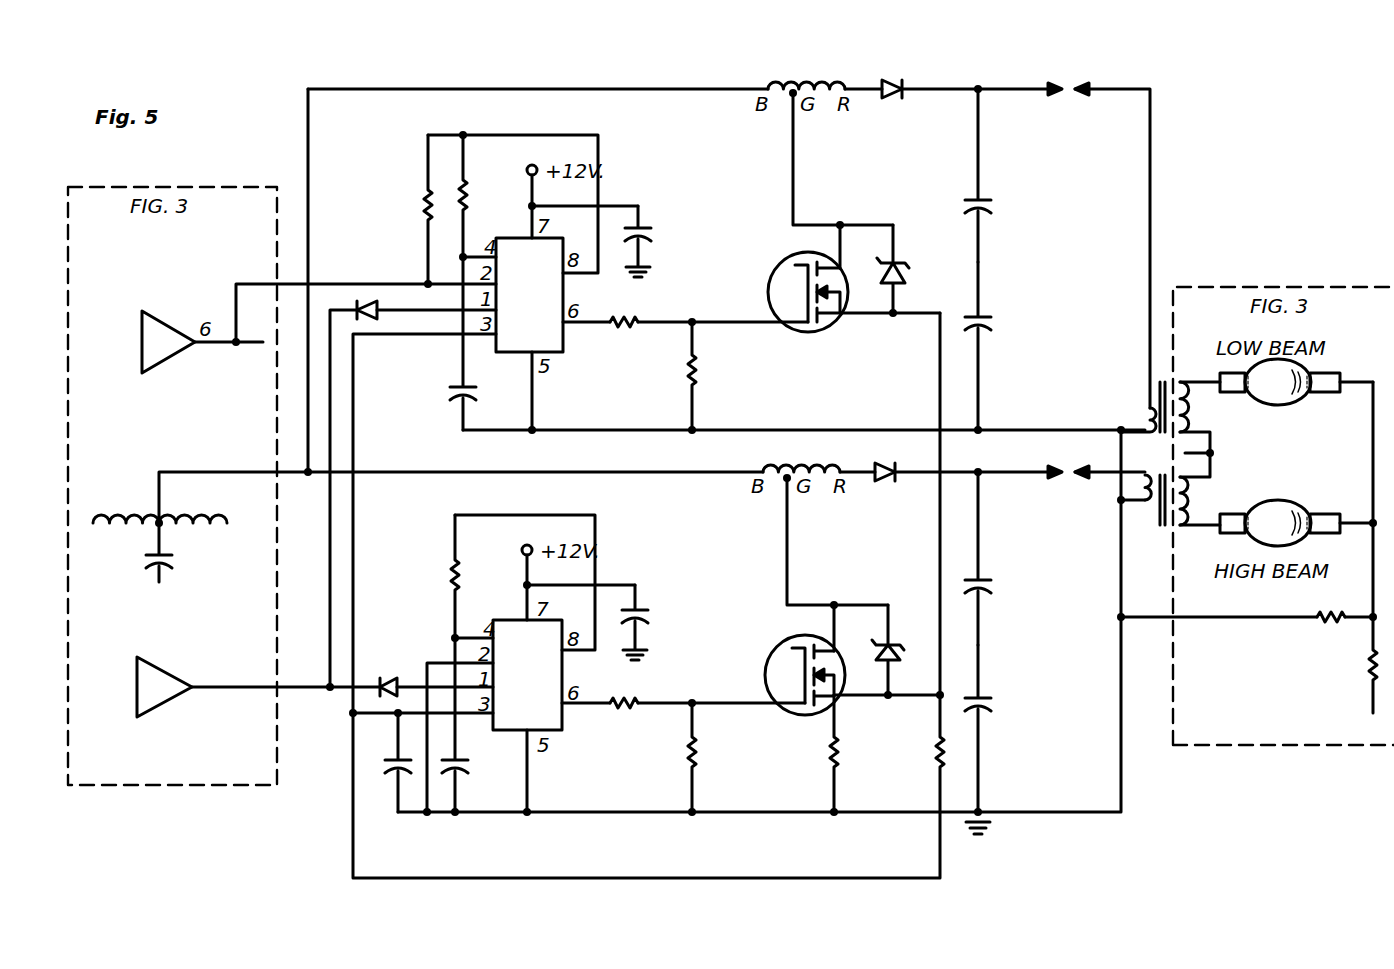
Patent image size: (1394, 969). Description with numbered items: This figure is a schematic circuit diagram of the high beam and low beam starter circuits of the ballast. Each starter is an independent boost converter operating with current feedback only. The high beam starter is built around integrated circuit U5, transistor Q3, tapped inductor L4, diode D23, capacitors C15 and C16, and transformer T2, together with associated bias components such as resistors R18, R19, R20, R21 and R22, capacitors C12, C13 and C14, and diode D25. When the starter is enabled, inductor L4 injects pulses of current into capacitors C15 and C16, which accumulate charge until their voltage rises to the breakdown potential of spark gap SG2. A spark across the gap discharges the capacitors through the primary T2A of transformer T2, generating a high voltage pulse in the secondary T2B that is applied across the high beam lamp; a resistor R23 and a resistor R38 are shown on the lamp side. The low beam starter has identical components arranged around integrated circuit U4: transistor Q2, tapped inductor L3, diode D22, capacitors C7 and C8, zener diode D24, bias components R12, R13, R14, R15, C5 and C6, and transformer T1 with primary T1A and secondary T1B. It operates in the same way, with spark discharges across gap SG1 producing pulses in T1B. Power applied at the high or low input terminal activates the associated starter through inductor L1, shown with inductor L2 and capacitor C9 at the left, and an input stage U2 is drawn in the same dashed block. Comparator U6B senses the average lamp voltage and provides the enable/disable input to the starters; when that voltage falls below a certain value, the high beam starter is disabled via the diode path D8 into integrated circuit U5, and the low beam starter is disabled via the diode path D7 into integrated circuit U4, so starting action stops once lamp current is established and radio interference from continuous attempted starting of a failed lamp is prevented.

The amplifier / comparator U2 is at (168, 342).
The comparator U6B is at (164, 687).
The inductor L1 is at (120, 515).
The inductor L2 is at (201, 530).
The capacitor C9 is at (152, 576).
The resistor R12 is at (425, 202).
The resistor R13 is at (470, 198).
The integrated circuit U4 is at (529, 295).
The capacitor C6 is at (643, 228).
The capacitor C5 is at (448, 387).
The diode D7 is at (377, 310).
The resistor R14 is at (626, 332).
The resistor R15 is at (715, 376).
The inductor L3 is at (814, 82).
The diode D22 is at (895, 78).
The spark gap SG1 is at (1068, 83).
The MOSFET transistor Q2 is at (808, 292).
The zener diode D24 is at (900, 264).
The capacitor C7 is at (992, 210).
The capacitor C8 is at (992, 325).
The tapped inductor L4 is at (783, 468).
The diode D23 is at (894, 482).
The spark gap SG2 is at (1067, 470).
The transistor Q3 is at (805, 675).
The zener diode D25 is at (892, 640).
The capacitor C15 is at (992, 581).
The capacitor C16 is at (992, 706).
The resistor R18 is at (450, 576).
The integrated circuit U5 is at (527, 675).
The capacitor C14 is at (645, 614).
The diode D8 is at (390, 678).
The resistor R19 is at (622, 711).
The capacitor C13 is at (470, 776).
The capacitor C12 is at (386, 782).
The resistor R20 is at (682, 772).
The resistor R21 is at (828, 763).
The resistor R22 is at (933, 763).
The ignition transformer T1 is at (1118, 412).
The primary winding T1A is at (1145, 410).
The secondary T1B is at (1196, 407).
The transformer T2 is at (1152, 531).
The primary T2A is at (1144, 487).
The secondary T2B is at (1191, 502).
The resistor R23 is at (1330, 626).
The resistor R38 is at (1371, 674).